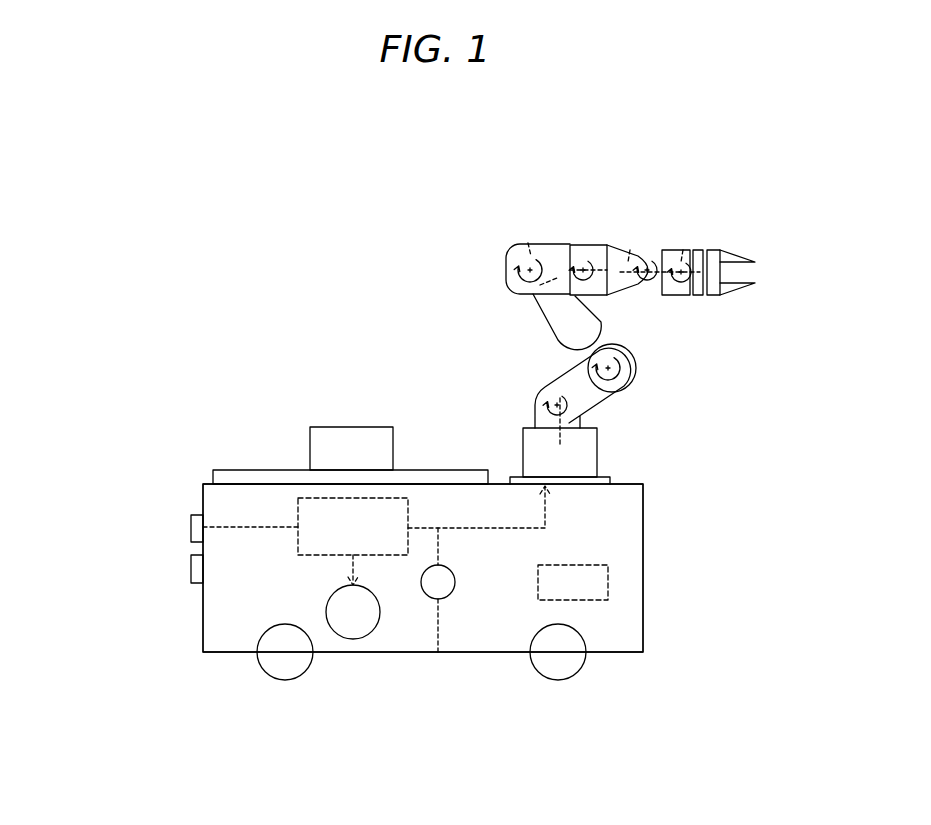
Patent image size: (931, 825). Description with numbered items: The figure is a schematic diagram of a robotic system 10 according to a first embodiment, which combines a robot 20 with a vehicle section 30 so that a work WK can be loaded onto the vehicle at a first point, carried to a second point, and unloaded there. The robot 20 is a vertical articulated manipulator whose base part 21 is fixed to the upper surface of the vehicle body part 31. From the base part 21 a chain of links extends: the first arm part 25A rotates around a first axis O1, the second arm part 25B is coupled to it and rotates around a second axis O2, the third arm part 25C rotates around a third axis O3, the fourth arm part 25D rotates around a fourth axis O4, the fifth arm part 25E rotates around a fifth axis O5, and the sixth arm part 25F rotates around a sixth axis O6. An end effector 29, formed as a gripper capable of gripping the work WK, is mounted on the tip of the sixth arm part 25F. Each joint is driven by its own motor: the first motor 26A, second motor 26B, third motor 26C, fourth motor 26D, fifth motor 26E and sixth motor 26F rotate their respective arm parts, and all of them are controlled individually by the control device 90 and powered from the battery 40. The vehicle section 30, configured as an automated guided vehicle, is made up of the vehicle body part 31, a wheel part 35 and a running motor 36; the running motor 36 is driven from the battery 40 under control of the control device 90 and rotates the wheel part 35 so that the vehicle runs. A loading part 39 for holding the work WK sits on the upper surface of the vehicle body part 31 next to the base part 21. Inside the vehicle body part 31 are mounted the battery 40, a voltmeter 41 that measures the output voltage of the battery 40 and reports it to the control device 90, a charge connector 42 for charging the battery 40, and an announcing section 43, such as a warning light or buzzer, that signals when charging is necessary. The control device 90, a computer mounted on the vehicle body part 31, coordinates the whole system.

The robotic system 10 is at (134, 243).
The robot 20 is at (403, 280).
The base part 21 is at (523, 450).
The first arm part 25A is at (540, 387).
The second arm part 25B is at (545, 318).
The third arm part 25C is at (512, 250).
The fourth arm part 25D is at (585, 245).
The fifth arm part 25E is at (683, 296).
The sixth arm part 25F is at (712, 296).
The first motor 26A is at (540, 409).
The second motor 26B is at (598, 362).
The third motor 26C is at (528, 243).
The fourth motor 26D is at (557, 278).
The fifth motor 26E is at (630, 250).
The sixth motor 26F is at (683, 250).
The end effector 29 is at (737, 253).
The vehicle section 30 is at (134, 472).
The vehicle body part 31 is at (643, 520).
The wheel part 35 is at (570, 677).
The running motor 36 is at (353, 640).
The loading part 39 is at (258, 470).
The battery 40 is at (305, 556).
The voltmeter 41 is at (438, 652).
The charge connector 42 is at (190, 527).
The announcing section 43 is at (190, 568).
The control device 90 is at (608, 583).
The first axis O1 is at (560, 447).
The second axis O2 is at (625, 380).
The third axis O3 is at (506, 264).
The fourth axis O4 is at (563, 245).
The fifth axis O5 is at (634, 284).
The sixth axis O6 is at (667, 295).
The work WK is at (350, 427).